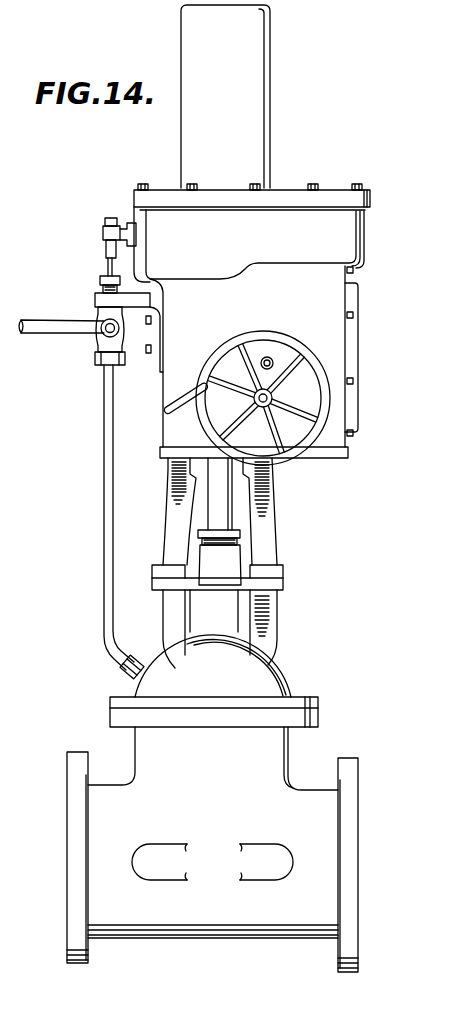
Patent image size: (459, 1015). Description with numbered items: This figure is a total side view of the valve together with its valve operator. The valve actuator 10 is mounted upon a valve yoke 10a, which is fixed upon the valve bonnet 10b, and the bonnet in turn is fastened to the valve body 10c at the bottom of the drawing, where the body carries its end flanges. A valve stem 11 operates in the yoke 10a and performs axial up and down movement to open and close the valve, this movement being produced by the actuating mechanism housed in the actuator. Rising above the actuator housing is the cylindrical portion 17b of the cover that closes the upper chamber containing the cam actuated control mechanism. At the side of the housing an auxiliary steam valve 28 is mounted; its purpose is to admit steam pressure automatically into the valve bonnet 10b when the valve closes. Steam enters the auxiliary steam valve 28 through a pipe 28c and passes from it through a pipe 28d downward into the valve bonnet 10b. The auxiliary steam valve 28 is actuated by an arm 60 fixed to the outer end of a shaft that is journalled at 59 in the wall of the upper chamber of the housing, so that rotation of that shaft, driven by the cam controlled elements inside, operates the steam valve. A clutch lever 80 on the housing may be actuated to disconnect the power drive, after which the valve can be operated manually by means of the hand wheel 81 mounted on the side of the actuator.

The valve actuator 10 is at (302, 172).
The valve yoke 10a is at (268, 537).
The valve bonnet 10b is at (285, 673).
The valve body 10c is at (110, 766).
The valve stem 11 is at (218, 501).
The cylindrical portion 17b is at (272, 60).
The auxiliary steam valve 28 is at (90, 342).
The pipe 28c is at (52, 322).
The pipe 28d is at (100, 628).
The journal 59 is at (138, 221).
The arm 60 is at (105, 233).
The clutch lever 80 is at (185, 401).
The hand wheel 81 is at (298, 452).